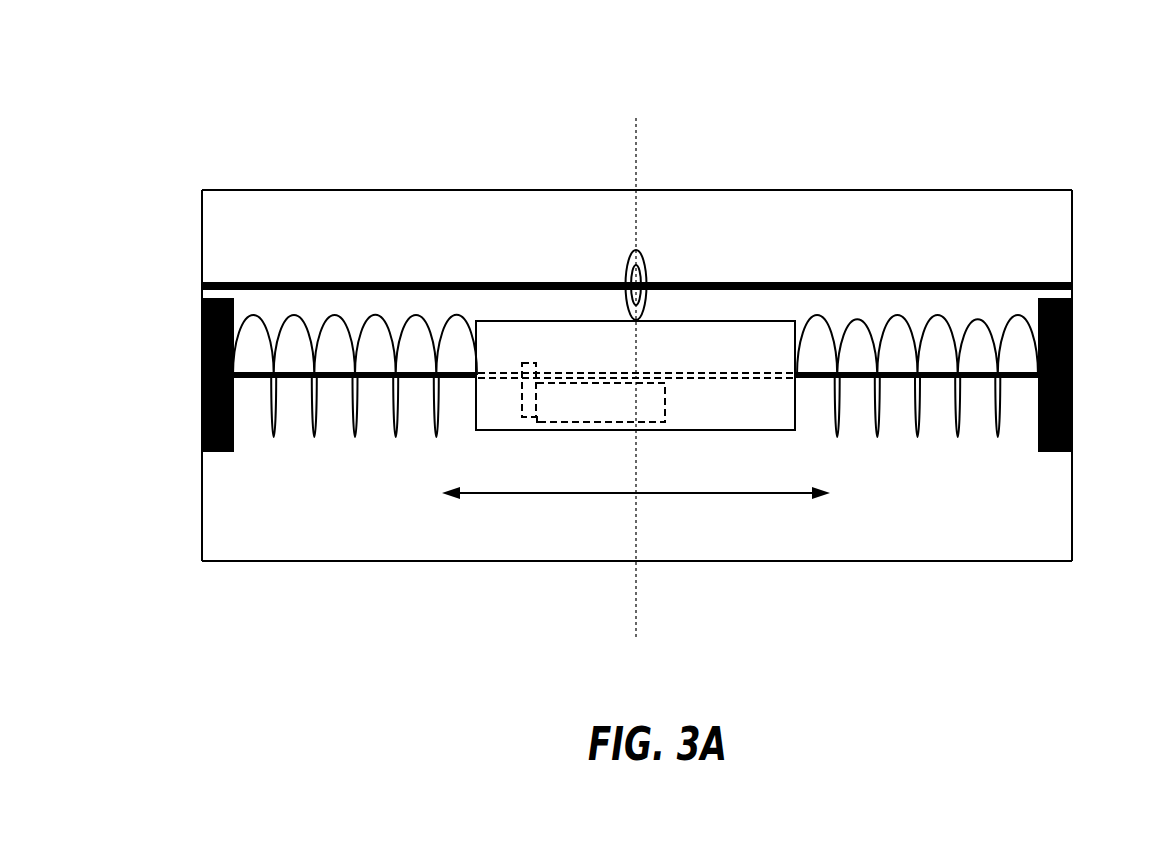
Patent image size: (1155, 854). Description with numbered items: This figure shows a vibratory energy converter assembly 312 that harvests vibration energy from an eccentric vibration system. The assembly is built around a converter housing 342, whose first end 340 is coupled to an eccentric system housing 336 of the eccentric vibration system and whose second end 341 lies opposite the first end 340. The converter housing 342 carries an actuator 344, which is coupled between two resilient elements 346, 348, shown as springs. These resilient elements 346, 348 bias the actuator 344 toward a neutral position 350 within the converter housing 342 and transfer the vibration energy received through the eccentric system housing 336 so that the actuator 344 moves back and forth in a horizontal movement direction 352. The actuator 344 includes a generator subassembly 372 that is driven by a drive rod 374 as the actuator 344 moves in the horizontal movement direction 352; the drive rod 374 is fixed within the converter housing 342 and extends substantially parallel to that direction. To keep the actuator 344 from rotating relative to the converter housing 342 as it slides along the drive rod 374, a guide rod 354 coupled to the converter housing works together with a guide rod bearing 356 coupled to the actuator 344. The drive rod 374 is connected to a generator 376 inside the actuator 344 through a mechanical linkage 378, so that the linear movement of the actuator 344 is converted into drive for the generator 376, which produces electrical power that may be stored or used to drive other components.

The vibratory energy converter assembly 312 is at (150, 66).
The eccentric system housing 336 is at (1073, 265).
The first end 340 is at (1072, 561).
The second end 341 is at (202, 561).
The converter housing 342 is at (349, 190).
The actuator 344 is at (723, 407).
The resilient element 346 is at (917, 427).
The resilient element 348 is at (353, 435).
The neutral position 350 is at (636, 178).
The horizontal movement direction 352 is at (595, 497).
The guide rod 354 is at (521, 283).
The guide rod bearing 356 is at (648, 281).
The generator subassembly 372 is at (543, 422).
The drive rod 374 is at (498, 378).
The generator 376 is at (565, 415).
The mechanical linkage 378 is at (532, 362).